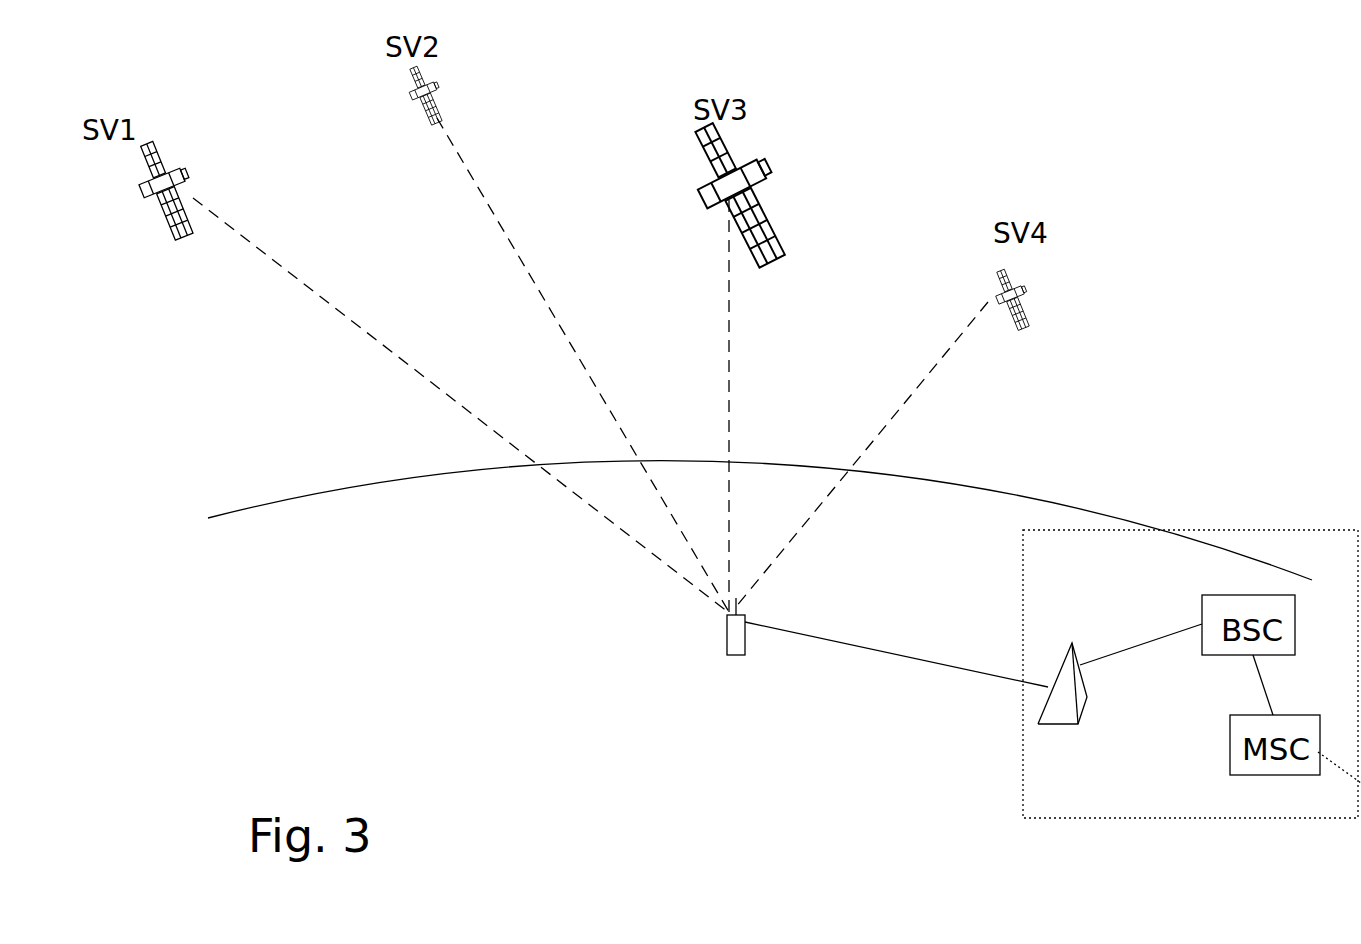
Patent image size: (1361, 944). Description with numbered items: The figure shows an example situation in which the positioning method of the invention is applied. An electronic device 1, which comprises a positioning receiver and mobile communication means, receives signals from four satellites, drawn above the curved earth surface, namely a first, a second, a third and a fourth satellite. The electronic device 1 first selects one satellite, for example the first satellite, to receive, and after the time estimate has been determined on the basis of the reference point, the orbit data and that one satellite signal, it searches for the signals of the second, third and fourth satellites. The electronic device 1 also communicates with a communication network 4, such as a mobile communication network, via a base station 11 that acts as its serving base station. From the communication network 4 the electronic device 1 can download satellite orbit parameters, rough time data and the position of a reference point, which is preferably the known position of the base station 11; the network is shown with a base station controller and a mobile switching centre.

The electronic device 1 is at (740, 633).
The communication network 4 is at (1022, 772).
The base station 11 is at (1078, 685).